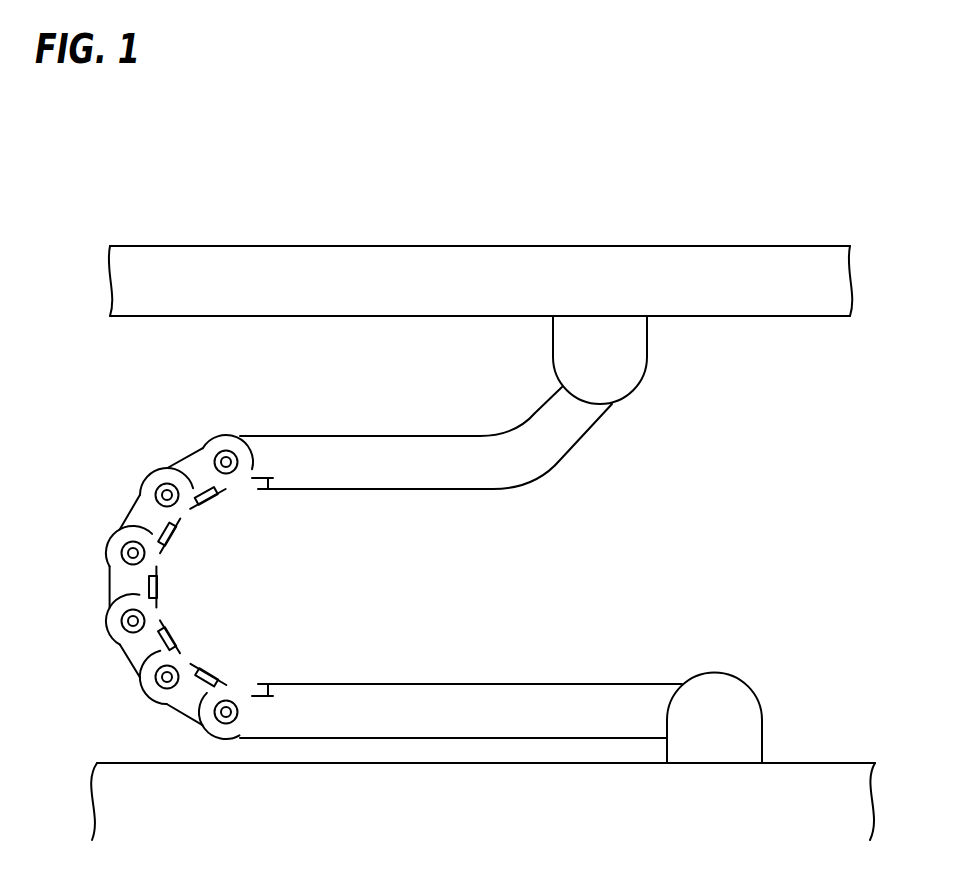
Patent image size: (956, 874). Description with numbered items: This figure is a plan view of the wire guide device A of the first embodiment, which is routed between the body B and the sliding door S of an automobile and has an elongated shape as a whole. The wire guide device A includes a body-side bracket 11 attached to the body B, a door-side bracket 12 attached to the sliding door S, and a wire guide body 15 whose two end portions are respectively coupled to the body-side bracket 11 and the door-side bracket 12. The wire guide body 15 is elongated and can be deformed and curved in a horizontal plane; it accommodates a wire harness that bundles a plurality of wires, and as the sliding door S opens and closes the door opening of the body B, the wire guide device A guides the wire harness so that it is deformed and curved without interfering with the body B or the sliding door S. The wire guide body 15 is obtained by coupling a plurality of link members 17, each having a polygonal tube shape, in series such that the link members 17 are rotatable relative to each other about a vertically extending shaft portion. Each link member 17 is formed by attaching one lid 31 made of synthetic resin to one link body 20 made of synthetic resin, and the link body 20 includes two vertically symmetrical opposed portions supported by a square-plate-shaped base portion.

The body-side bracket 11 is at (723, 707).
The door-side bracket 12 is at (612, 352).
The wire guide body 15 is at (351, 540).
The link member 17 is at (166, 587).
The link body 20 is at (170, 542).
The lid 31 is at (190, 518).
The wire guide device A is at (72, 390).
The sliding door S is at (717, 263).
The body B is at (807, 773).